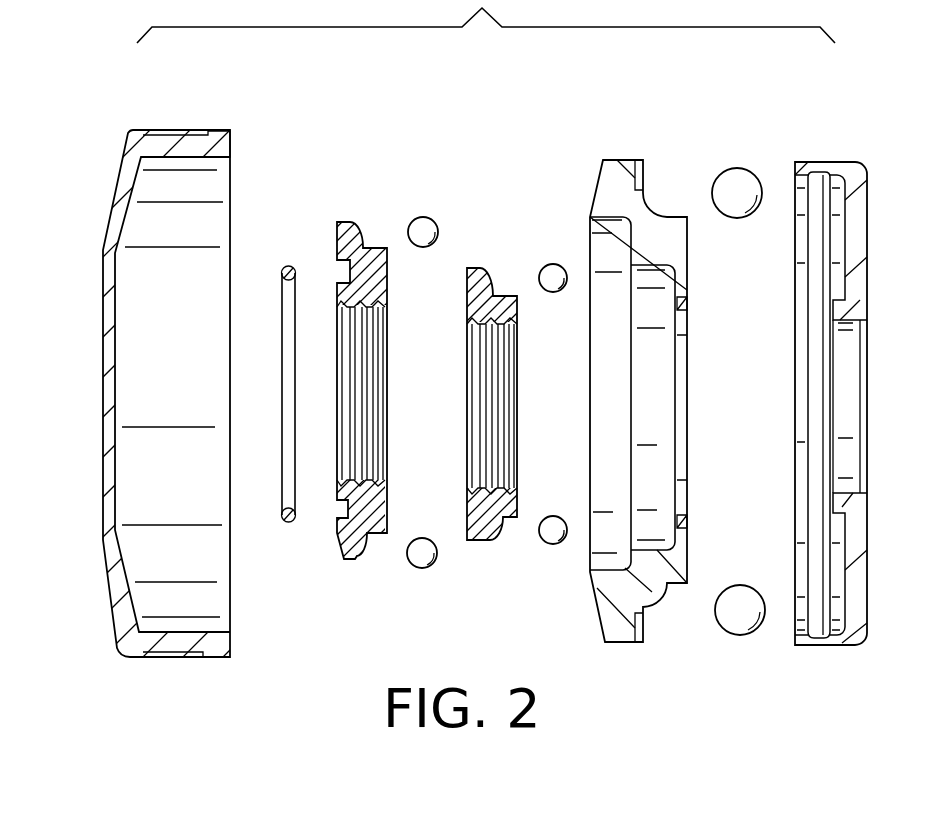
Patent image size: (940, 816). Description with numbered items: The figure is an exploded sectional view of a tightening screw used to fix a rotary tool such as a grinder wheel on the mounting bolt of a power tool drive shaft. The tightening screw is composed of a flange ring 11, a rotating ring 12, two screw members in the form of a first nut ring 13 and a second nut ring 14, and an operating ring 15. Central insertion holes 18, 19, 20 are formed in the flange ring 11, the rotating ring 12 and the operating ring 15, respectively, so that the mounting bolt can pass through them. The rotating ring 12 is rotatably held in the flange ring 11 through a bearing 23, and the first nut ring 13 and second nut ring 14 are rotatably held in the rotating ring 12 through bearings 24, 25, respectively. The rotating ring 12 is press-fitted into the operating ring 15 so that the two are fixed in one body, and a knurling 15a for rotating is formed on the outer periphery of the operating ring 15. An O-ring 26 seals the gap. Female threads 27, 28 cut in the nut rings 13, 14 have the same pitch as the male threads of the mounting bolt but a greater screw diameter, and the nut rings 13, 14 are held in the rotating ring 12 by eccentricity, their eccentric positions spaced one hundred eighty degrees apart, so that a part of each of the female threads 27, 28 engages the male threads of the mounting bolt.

The flange ring 11 is at (851, 372).
The rotating ring 12 is at (661, 370).
The first nut ring 13 is at (470, 408).
The second nut ring 14 is at (470, 408).
The operating ring 15 is at (223, 132).
The knurling 15a is at (168, 130).
The insertion hole 18 is at (848, 323).
The insertion hole 19 is at (688, 308).
The insertion hole 20 is at (105, 320).
The bearing 23 is at (740, 178).
The bearing 24 is at (553, 264).
The bearing 25 is at (424, 217).
The O-ring 26 is at (288, 266).
The female threads 27 is at (493, 327).
The female threads 28 is at (358, 305).